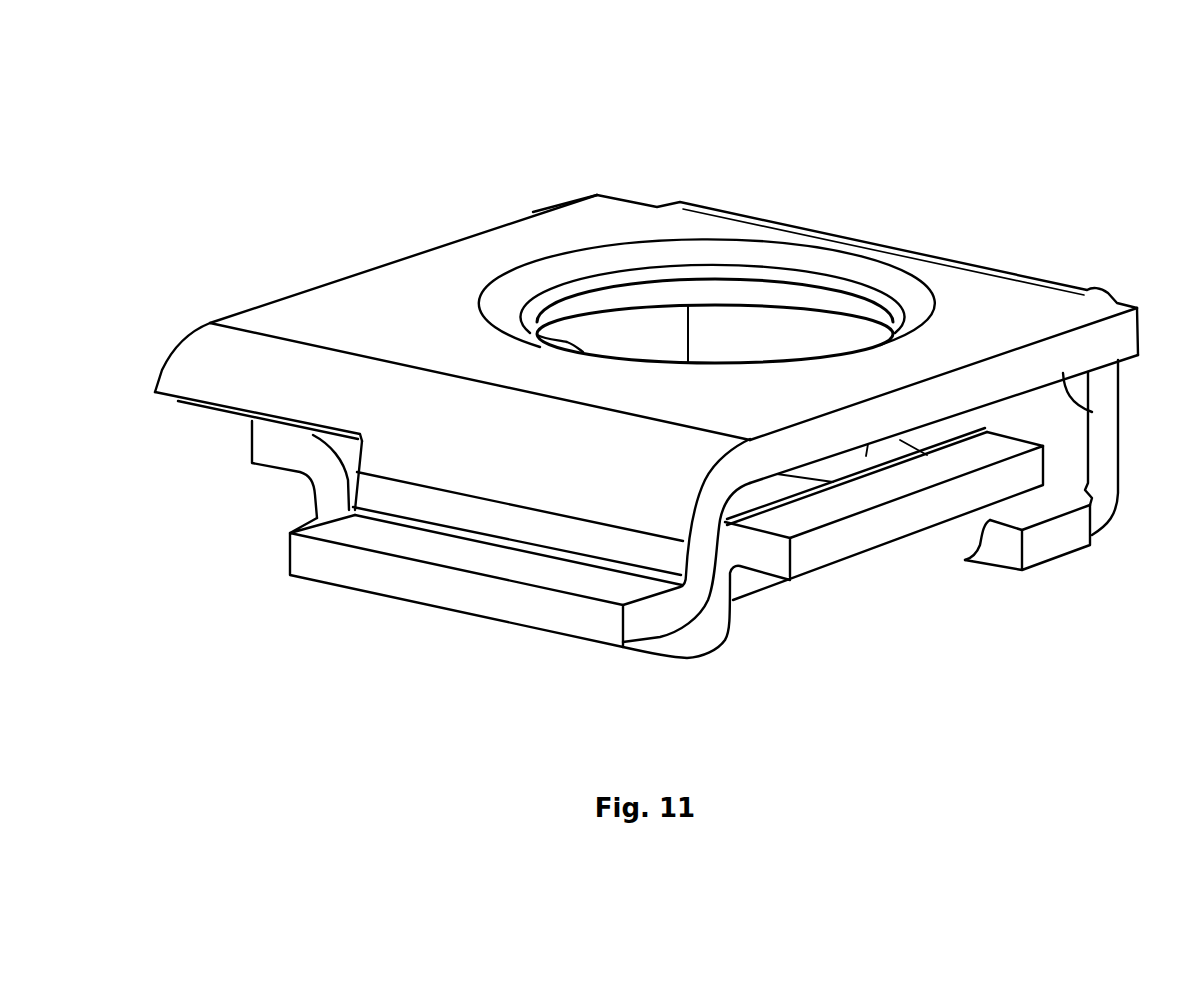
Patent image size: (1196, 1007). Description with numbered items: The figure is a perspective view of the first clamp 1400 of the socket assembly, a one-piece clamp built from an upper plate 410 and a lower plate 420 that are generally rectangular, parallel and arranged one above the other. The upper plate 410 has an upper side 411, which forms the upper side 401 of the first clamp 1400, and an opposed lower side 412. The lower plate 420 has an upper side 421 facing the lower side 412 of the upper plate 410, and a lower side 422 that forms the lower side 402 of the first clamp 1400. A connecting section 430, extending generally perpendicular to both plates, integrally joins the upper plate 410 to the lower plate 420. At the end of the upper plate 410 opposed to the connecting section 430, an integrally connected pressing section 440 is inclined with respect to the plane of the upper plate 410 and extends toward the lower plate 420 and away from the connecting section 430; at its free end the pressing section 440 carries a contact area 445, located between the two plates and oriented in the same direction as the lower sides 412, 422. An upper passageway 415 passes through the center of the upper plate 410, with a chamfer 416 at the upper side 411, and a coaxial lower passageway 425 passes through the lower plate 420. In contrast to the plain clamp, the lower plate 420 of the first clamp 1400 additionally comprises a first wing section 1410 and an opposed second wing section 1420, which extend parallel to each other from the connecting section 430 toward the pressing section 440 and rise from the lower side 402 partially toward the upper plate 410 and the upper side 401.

The first clamp 1400 is at (262, 78).
The upper side of the first clamp 401 is at (637, 158).
The lower side of the first clamp 402 is at (688, 688).
The upper plate 410 is at (389, 258).
The upper side of the upper plate 411 is at (505, 248).
The lower side of the upper plate 412 is at (1095, 411).
The upper passageway 415 is at (827, 290).
The chamfer 416 is at (752, 253).
The lower plate 420 is at (1047, 535).
The upper side of the lower plate 421 is at (1043, 512).
The lower side of the lower plate 422 is at (1030, 572).
The lower passageway 425 is at (730, 512).
The connecting section 430 is at (1107, 432).
The pressing section 440 is at (411, 543).
The contact area 445 is at (478, 611).
The first wing section 1410 is at (286, 452).
The second wing section 1420 is at (897, 510).